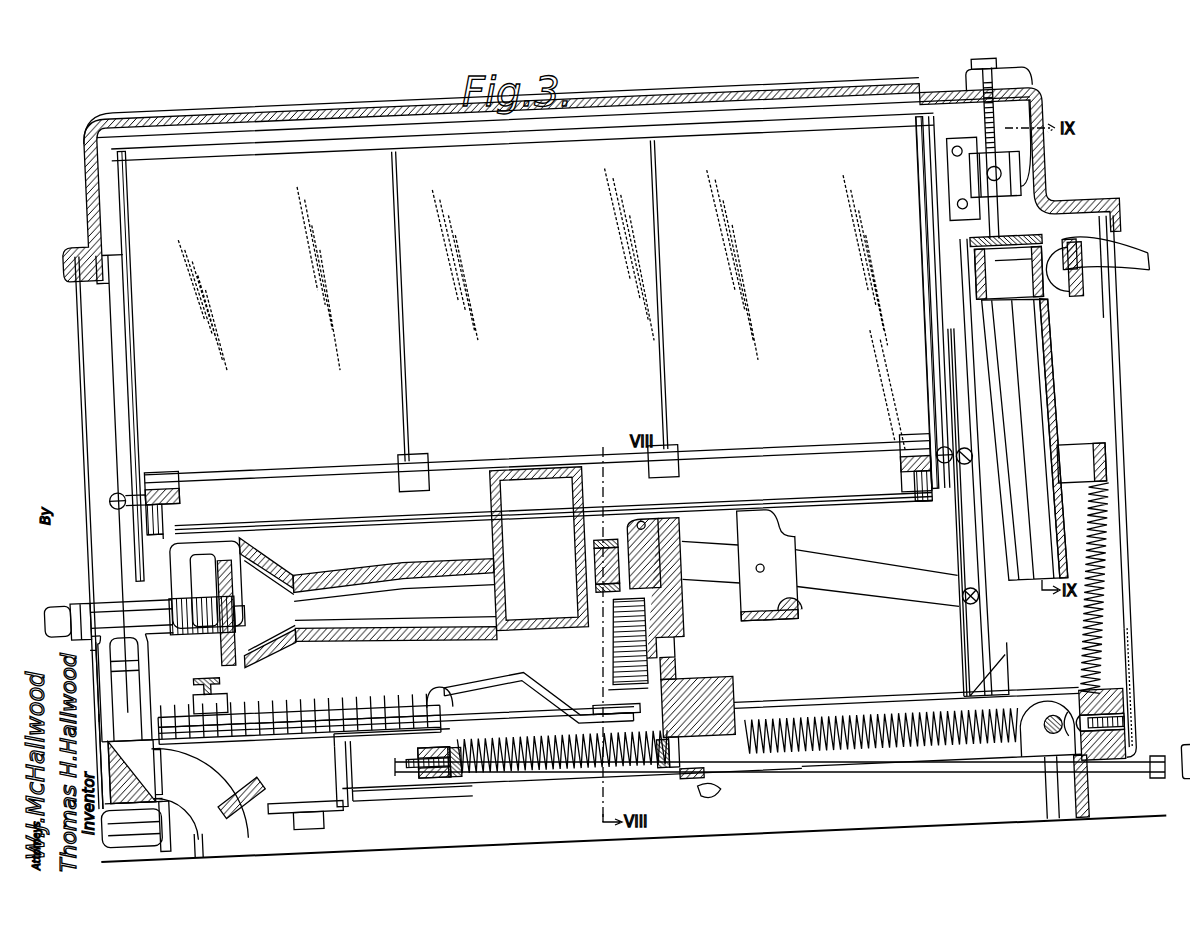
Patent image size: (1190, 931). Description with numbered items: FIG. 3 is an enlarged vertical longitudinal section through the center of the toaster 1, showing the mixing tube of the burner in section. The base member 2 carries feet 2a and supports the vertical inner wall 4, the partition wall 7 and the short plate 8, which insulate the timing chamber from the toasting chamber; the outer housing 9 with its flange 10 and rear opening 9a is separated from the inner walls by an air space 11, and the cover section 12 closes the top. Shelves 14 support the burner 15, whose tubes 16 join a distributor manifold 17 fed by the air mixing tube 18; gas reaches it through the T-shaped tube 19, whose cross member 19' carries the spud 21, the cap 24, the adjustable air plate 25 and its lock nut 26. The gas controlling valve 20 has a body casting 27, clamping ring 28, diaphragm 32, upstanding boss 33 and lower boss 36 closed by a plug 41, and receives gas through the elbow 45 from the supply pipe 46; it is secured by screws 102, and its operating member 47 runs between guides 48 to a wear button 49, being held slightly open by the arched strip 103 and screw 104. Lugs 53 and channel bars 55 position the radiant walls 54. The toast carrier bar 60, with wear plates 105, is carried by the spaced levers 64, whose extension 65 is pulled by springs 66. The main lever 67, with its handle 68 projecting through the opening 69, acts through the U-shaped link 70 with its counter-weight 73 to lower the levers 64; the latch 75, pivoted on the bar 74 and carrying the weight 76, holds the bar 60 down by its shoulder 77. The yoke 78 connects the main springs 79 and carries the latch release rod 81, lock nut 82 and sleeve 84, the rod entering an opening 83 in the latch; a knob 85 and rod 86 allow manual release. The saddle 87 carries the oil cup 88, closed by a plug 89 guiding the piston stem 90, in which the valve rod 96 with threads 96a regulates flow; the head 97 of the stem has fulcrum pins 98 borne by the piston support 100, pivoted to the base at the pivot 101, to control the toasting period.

The toaster 1 is at (66, 402).
The base member 2 is at (1116, 716).
The feet 2a is at (190, 833).
The vertical inner wall 4 is at (118, 354).
The partition wall 7 is at (954, 553).
The short plate 8 is at (138, 348).
The outer housing 9 is at (88, 434).
The opening 9a is at (89, 641).
The flange 10 is at (92, 689).
The space 11 is at (86, 316).
The top or cover section 12 is at (100, 166).
The shelf 14 is at (150, 518).
The burner 15 is at (400, 518).
The tubes 16 is at (306, 516).
The distributor manifold 17 is at (491, 496).
The air mixing tube 18 is at (400, 637).
The gas conducting tube 19 is at (141, 687).
The cross member 19' is at (131, 618).
The gas controlling valve 20 is at (282, 698).
The spud 21 is at (278, 590).
The cap 24 is at (56, 581).
The circular plate 25 is at (215, 640).
The lock nut 26 is at (207, 585).
The body casting 27 is at (345, 730).
The clamping ring 28 is at (330, 690).
The diaphragm 32 is at (438, 704).
The upstanding boss 33 is at (142, 668).
The central boss 36 is at (340, 753).
The plug 41 is at (330, 794).
The elbow 45 is at (226, 800).
The gas supply pipe 46 is at (112, 826).
The operating member 47 is at (518, 665).
The guides 48 is at (436, 680).
The wear receiving button 49 is at (590, 705).
The lugs 53 is at (160, 453).
The radiant walls 54 is at (540, 318).
The channel bars 55 is at (540, 141).
The cross bar 60 is at (592, 565).
The levers 64 is at (884, 608).
The extension 65 is at (1080, 465).
The springs 66 is at (1102, 608).
The main lever 67 is at (1084, 317).
The handle 68 is at (1142, 276).
The elongated opening 69 is at (1125, 344).
The link member 70 is at (794, 556).
The counter-weight 73 is at (798, 618).
The bar 74 is at (608, 651).
The latch member 75 is at (680, 632).
The weight 76 is at (700, 690).
The shoulder 77 is at (604, 690).
The spring connecting yoke 78 is at (438, 745).
The main springs 79 is at (800, 727).
The latch release rod 81 is at (522, 775).
The lock nut 82 is at (434, 772).
The opening 83 is at (664, 780).
The sleeve 84 is at (648, 770).
The knob 85 is at (1168, 780).
The rod 86 is at (904, 786).
The saddle 87 is at (1052, 272).
The cylindrical cup 88 is at (1058, 396).
The plug 89 is at (1040, 248).
The piston stem 90 is at (1034, 214).
The valve rod 96 is at (1000, 135).
The threads 96a is at (1012, 102).
The head 97 is at (1034, 182).
The fulcrum pins 98 is at (1016, 191).
The piston support 100 is at (972, 296).
The pivot 101 is at (1044, 735).
The screws 102 is at (143, 740).
The strip of metal 103 is at (219, 684).
The screw 104 is at (213, 664).
The wear resisting plates 105 is at (592, 543).